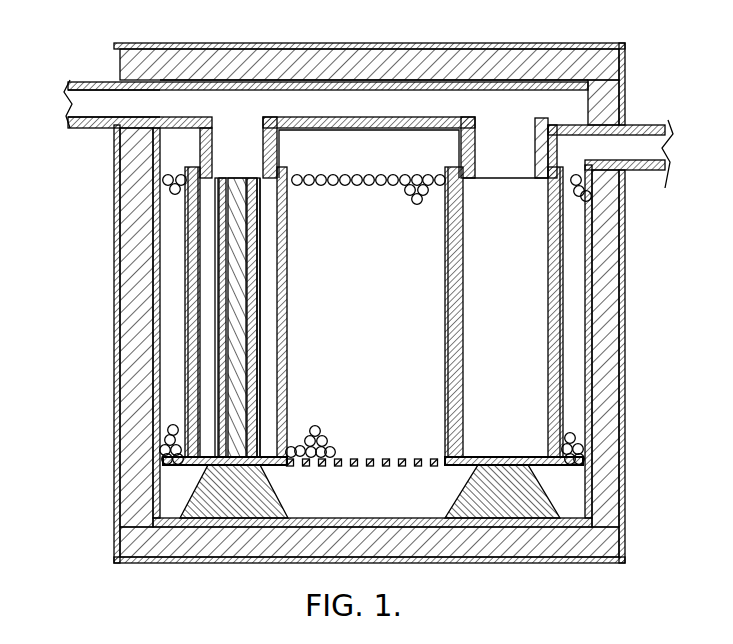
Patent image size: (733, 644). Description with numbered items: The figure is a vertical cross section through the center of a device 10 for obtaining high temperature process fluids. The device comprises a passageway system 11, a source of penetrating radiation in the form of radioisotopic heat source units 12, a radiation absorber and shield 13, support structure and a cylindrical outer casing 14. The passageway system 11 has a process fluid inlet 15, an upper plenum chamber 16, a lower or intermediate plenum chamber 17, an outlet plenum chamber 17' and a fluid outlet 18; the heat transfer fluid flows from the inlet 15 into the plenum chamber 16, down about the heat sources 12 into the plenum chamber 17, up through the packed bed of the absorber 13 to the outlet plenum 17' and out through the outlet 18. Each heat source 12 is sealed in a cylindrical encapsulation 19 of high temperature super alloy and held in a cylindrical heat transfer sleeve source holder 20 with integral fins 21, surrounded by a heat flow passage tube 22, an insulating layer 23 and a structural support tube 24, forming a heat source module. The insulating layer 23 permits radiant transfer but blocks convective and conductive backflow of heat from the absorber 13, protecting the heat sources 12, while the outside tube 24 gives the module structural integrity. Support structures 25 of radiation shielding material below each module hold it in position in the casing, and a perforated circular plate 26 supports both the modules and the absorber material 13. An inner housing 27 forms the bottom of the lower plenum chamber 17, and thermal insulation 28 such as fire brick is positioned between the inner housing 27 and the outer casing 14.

The device for obtaining high temperature process fluids 10 is at (88, 273).
The passageway system 11 is at (230, 117).
The radioisotopic heat source unit 12 is at (235, 226).
The radiation absorber and shield 13 is at (172, 218).
The outer casing 14 is at (625, 293).
The process fluid inlet 15 is at (88, 82).
The upper plenum chamber 16 is at (298, 105).
The lower or intermediate plenum chamber 17 is at (238, 532).
The outlet plenum chamber 17' is at (369, 133).
The fluid outlet 18 is at (650, 128).
The cylindrical encapsulation 19 is at (247, 285).
The heat transfer sleeve source holder 20 is at (255, 320).
The integral fins 21 is at (262, 362).
The heat flow passage tube 22 is at (196, 358).
The insulating layer 23 is at (190, 412).
The structural support tube 24 is at (283, 402).
The support structure 25 is at (495, 495).
The perforated circular plate 26 is at (400, 470).
The inner housing 27 is at (152, 488).
The thermal insulation 28 is at (140, 528).